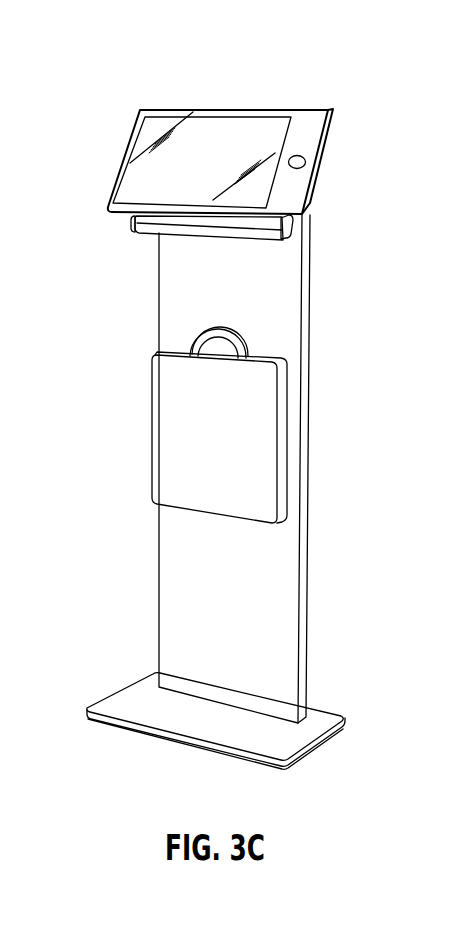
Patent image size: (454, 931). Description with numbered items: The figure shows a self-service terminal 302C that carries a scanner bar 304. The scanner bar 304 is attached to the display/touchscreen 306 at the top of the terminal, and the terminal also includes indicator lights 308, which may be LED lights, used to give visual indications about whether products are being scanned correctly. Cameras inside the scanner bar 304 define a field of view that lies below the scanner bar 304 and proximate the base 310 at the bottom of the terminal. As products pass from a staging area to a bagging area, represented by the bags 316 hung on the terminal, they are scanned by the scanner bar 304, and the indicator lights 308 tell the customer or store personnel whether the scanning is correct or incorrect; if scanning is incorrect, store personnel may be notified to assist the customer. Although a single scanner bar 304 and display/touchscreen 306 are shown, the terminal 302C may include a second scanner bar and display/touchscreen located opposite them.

The self-service terminal 302C is at (347, 83).
The scanner bar 304 is at (210, 233).
The display/touchscreen 306 is at (193, 108).
The indicator lights 308 is at (133, 222).
The base 310 is at (292, 647).
The bags 316 is at (268, 442).